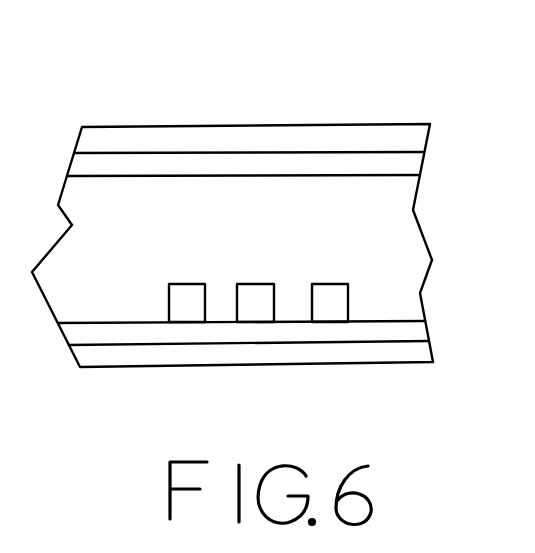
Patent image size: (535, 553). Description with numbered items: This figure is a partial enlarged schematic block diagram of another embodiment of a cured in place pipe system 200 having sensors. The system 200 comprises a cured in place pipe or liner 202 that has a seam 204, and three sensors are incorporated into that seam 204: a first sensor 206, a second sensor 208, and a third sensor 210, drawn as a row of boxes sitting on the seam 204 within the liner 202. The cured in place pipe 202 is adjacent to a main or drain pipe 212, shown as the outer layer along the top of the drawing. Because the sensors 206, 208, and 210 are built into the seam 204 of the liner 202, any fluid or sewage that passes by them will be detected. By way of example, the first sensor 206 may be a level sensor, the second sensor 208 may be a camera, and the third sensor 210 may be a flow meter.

The cured in place pipe system 200 is at (355, 101).
The cured in place pipe or liner 202 is at (362, 162).
The seam 204 is at (97, 325).
The first sensor 206 is at (182, 298).
The second sensor 208 is at (251, 297).
The third sensor 210 is at (325, 298).
The main or drain pipe 212 is at (123, 142).